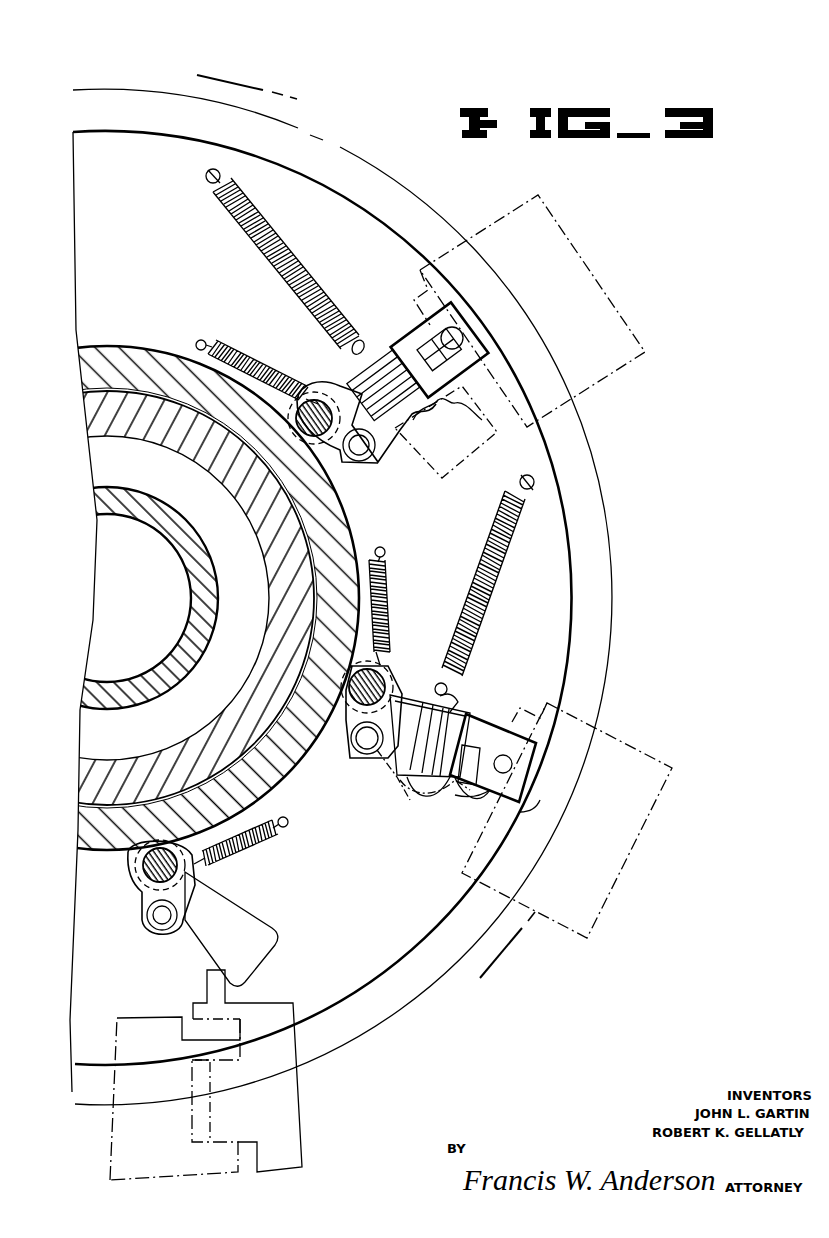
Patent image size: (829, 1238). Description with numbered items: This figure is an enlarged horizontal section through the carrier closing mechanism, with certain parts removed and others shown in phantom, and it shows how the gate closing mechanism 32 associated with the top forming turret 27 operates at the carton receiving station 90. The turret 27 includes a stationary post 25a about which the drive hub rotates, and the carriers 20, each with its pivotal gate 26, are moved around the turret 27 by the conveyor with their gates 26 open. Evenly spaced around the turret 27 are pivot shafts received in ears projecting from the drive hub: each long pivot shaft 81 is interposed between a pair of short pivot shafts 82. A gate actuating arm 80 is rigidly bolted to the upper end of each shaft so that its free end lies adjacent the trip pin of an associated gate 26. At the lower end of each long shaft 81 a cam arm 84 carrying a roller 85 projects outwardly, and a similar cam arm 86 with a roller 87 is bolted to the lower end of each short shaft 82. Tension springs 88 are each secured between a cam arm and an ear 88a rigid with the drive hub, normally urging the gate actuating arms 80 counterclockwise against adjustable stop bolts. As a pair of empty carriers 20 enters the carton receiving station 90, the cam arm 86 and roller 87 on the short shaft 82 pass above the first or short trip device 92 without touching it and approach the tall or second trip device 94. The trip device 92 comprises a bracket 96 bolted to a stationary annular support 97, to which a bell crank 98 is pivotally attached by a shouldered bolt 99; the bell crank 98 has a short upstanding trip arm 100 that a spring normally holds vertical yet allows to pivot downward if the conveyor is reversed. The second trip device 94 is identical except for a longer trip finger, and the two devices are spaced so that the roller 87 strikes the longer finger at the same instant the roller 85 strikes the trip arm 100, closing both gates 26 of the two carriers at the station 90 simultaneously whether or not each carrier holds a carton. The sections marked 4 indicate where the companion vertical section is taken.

The section line 4- 4 is at (237, 78).
The carrier 20 is at (556, 212).
The stationary post 25a is at (195, 590).
The pivotal gate 26 is at (302, 1073).
The top forming turret 27 is at (346, 128).
The gate closing mechanism 32 is at (352, 466).
The gate actuating arm 80 is at (458, 430).
The long pivot shaft 81 is at (452, 658).
The short pivot shaft 82 is at (315, 398).
The cam arm 84 is at (358, 742).
The roller 85 is at (373, 756).
The cam arm 86 is at (374, 460).
The roller 87 is at (378, 451).
The tension spring 88 is at (257, 352).
The ear 88a is at (200, 340).
The carton receiving station 90 is at (628, 446).
The first or short trip device 92 is at (470, 727).
The second or tall trip device 94 is at (392, 338).
The bracket 96 is at (520, 796).
The stationary annular support 97 is at (548, 622).
The bell crank 98 is at (440, 802).
The shouldered bolt 99 is at (490, 800).
The trip arm 100 is at (456, 700).